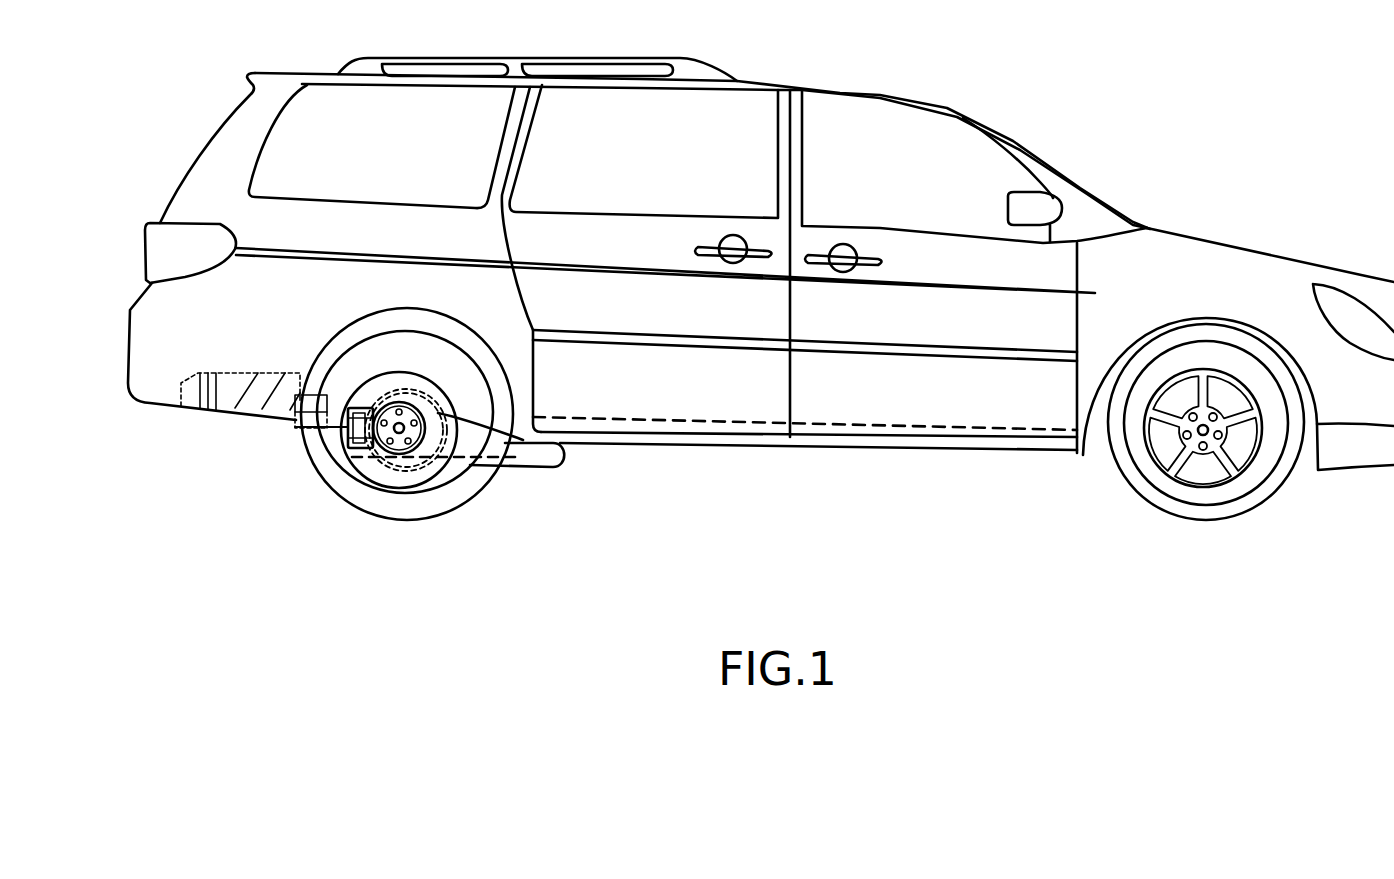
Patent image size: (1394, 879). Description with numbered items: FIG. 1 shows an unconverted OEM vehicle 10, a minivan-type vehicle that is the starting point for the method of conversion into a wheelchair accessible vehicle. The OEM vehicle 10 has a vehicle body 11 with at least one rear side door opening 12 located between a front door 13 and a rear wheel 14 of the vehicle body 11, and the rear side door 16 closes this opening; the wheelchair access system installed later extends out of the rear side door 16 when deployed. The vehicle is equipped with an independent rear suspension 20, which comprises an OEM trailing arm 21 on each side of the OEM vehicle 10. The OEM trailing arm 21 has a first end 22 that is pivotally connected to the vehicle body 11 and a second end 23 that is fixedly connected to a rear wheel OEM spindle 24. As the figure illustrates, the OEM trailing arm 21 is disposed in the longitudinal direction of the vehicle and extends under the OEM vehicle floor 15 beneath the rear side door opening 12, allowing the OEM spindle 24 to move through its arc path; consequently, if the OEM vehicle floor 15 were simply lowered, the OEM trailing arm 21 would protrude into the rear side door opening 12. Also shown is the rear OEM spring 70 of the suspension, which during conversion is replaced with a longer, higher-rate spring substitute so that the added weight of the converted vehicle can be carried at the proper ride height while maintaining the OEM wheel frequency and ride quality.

The OEM vehicle 10 is at (1293, 236).
The vehicle body 11 is at (1257, 277).
The rear side door opening 12 is at (734, 447).
The front door 13 is at (1036, 430).
The rear wheel 14 is at (358, 513).
The OEM vehicle floor 15 is at (840, 393).
The rear side door 16 is at (686, 320).
The independent rear suspension 20 is at (408, 522).
The OEM trailing arm 21 is at (500, 430).
The first end 22 is at (578, 400).
The second end 23 is at (452, 427).
The rear wheel OEM spindle 24 is at (367, 454).
The OEM spring 70 is at (348, 438).